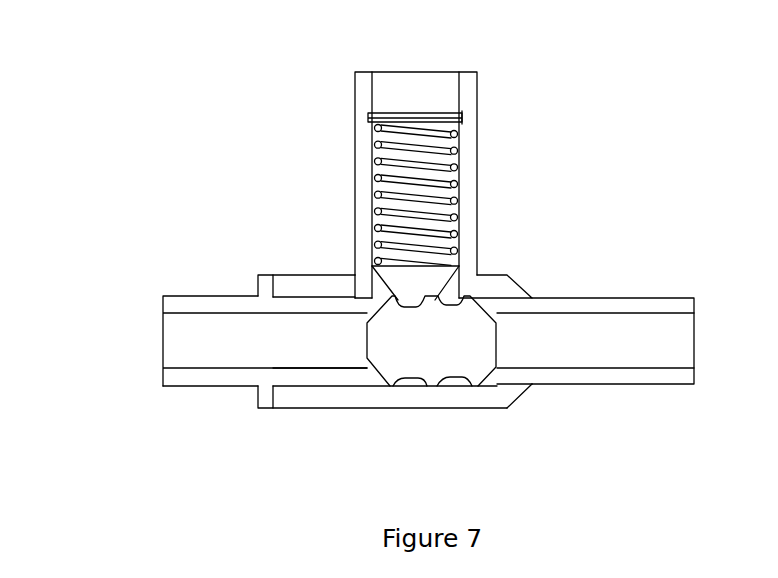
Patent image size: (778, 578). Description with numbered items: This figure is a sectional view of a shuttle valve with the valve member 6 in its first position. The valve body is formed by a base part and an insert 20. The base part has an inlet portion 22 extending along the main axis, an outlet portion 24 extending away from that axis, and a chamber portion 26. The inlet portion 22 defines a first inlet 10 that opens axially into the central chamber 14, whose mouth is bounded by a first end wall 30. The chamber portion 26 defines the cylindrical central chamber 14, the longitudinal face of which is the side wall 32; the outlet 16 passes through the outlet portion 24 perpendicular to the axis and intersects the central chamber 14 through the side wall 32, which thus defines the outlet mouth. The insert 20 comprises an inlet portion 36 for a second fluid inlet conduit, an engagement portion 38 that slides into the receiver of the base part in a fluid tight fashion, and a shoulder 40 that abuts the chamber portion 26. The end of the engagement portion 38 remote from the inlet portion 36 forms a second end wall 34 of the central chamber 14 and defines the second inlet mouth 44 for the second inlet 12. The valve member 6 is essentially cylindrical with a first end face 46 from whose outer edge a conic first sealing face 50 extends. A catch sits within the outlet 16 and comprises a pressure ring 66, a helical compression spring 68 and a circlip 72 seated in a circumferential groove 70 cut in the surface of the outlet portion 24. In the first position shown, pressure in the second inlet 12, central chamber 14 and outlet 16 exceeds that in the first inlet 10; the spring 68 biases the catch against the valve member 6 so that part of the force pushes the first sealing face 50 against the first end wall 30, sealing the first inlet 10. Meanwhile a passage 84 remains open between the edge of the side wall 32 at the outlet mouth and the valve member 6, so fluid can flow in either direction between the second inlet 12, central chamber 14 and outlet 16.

The valve member 6 is at (436, 350).
The first inlet 10 is at (665, 340).
The second inlet 12 is at (175, 342).
The central chamber 14 is at (358, 357).
The outlet 16 is at (407, 98).
The insert 20 is at (162, 407).
The inlet portion 22 is at (642, 296).
The outlet portion 24 is at (352, 94).
The chamber portion 26 is at (345, 403).
The first end wall 30 is at (483, 298).
The side wall 32 is at (358, 290).
The second end wall 34 is at (343, 327).
The inlet portion 36 is at (203, 386).
The engagement portion 38 is at (334, 360).
The shoulder 40 is at (264, 388).
The second inlet mouth 44 is at (340, 348).
The first end face 46 is at (498, 345).
The first sealing face 50 is at (498, 370).
The pressure ring 66 is at (442, 275).
The helical compression spring 68 is at (457, 136).
The groove 70 is at (460, 120).
The circlip 72 is at (440, 112).
The passage 84 is at (372, 298).